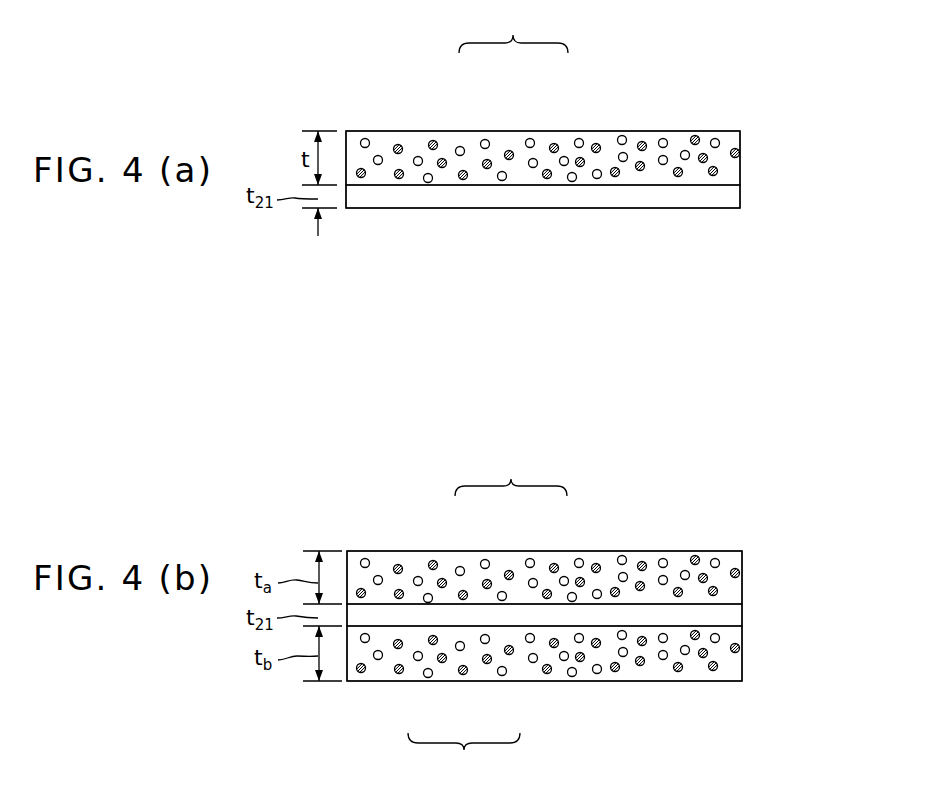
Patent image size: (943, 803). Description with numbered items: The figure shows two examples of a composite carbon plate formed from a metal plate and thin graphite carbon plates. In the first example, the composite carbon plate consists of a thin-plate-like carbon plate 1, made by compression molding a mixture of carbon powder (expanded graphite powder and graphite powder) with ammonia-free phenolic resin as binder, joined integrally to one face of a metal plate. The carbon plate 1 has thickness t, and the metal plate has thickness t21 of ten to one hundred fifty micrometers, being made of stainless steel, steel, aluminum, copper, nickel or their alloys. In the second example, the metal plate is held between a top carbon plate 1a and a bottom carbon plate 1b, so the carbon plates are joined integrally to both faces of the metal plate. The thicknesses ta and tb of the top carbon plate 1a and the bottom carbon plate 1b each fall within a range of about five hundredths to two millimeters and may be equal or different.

The carbon plate 1 is at (751, 138).
The top carbon plate 1a is at (753, 566).
The bottom carbon plate 1b is at (753, 656).